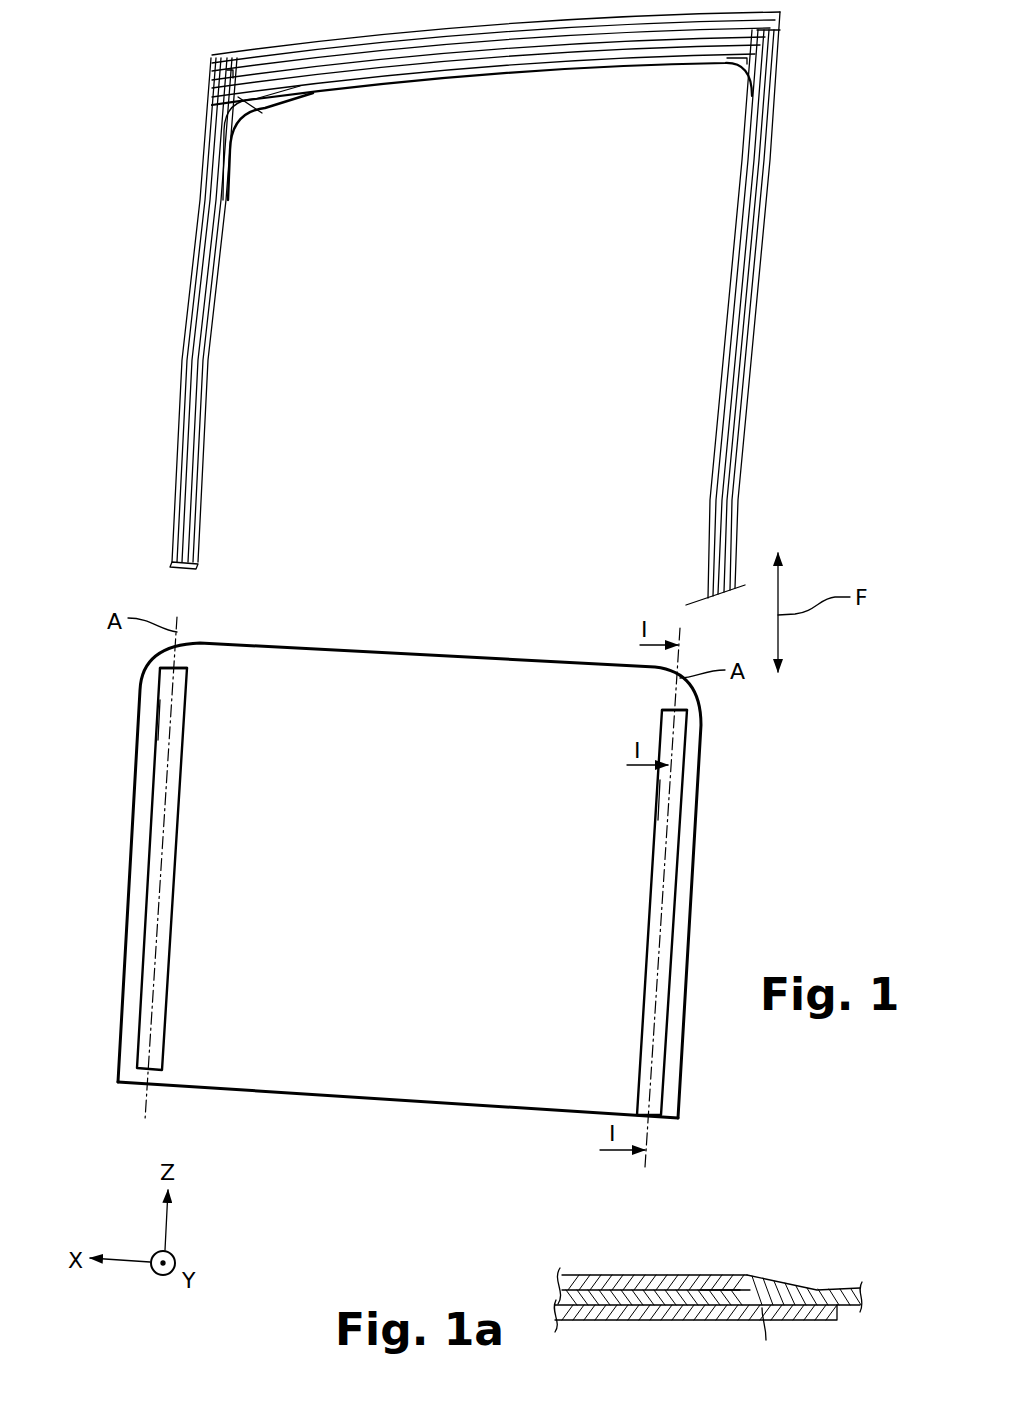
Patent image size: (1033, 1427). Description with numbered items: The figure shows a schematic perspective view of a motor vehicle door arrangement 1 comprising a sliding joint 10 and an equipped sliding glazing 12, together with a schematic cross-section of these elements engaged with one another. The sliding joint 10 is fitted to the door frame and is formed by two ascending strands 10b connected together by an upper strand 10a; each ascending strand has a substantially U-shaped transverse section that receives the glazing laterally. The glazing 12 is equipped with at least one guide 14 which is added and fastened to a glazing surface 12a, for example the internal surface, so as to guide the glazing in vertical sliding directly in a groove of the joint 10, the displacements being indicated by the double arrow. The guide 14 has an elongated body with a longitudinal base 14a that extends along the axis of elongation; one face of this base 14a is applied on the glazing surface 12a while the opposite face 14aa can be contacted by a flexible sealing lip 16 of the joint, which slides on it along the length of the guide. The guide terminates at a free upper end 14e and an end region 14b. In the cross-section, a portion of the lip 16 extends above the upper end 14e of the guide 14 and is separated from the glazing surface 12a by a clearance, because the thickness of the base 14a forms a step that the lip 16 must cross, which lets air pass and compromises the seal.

In FIG. 1, the vehicle door assembly 1 is at (365, 560).
In FIG. 1, the sliding joint 10 is at (447, 308).
In FIG. 1, the upper strand 10a is at (308, 44).
In FIG. 1, the ascending strand 10b is at (183, 390).
In FIG. 1, the sliding glazing 12 is at (482, 910).
In FIG. 1A, the sliding glazing 12 is at (673, 1279).
In FIG. 1, the glazing surface 12a is at (398, 1115).
In FIG. 1A, the glazing surface 12a is at (815, 1295).
In FIG. 1, the guide 14 is at (463, 876).
In FIG. 1A, the guide 14 is at (707, 1279).
In FIG. 1, the base 14a is at (162, 860).
In FIG. 1A, the base 14a is at (652, 1297).
In FIG. 1, the face of the base 14aa is at (175, 730).
In FIG. 1A, the face of the base 14aa is at (703, 1300).
In FIG. 1, the rail end 14b is at (184, 668).
In FIG. 1A, the upper end 14e is at (760, 1282).
In FIG. 1A, the lip 16 is at (712, 1282).